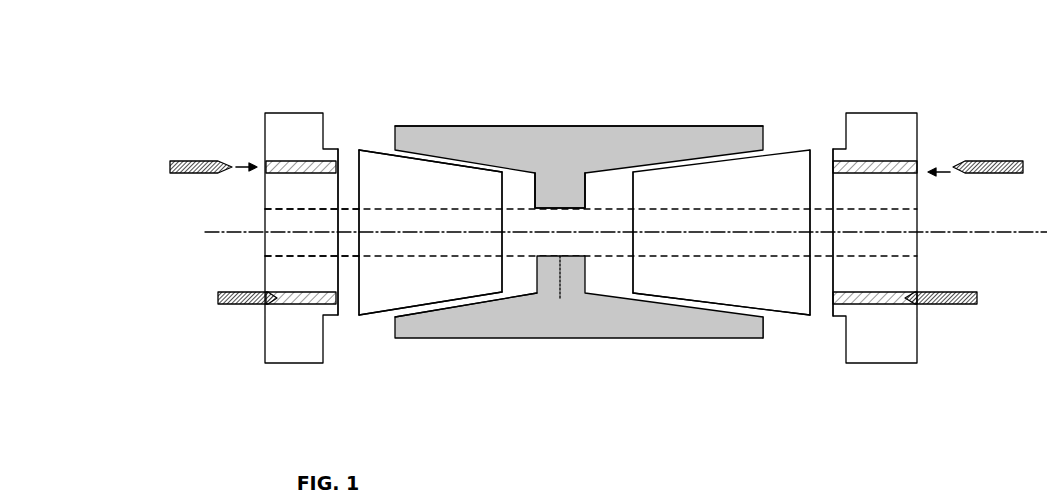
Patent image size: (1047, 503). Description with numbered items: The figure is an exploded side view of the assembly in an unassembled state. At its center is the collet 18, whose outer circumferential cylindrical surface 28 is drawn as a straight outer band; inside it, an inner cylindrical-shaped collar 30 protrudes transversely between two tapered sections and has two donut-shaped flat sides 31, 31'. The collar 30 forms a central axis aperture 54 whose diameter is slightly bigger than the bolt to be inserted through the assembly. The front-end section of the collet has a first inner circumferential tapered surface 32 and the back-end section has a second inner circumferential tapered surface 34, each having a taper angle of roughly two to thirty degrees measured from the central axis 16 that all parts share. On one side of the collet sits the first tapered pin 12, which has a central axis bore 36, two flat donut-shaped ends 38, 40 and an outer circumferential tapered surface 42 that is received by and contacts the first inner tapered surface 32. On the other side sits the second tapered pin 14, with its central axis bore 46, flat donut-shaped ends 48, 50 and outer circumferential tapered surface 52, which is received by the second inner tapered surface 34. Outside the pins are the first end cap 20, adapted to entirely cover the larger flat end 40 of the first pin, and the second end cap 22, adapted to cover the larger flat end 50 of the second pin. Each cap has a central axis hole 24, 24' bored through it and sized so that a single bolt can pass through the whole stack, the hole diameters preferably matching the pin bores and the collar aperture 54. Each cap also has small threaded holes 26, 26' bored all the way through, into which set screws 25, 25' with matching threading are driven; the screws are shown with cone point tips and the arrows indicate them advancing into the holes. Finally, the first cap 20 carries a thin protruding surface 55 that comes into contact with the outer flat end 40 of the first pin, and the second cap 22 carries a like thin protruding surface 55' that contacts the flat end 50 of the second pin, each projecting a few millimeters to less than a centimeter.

The first tapered pin 12 is at (773, 170).
The second tapered pin 14 is at (395, 197).
The central axis 16 is at (940, 231).
The collet 18 is at (620, 147).
The first end cap 20 is at (870, 123).
The second end cap 22 is at (300, 127).
The central axis hole 24 is at (626, 239).
The central axis hole 24' is at (272, 237).
The set screw 25 is at (974, 196).
The set screw 25' is at (212, 197).
The threaded hole 26 is at (905, 224).
The threaded hole 26' is at (271, 249).
The outer circumferential cylindrical surface 28 is at (502, 125).
The inner cylindrical-shaped collar 30 is at (565, 190).
The flat side 31 is at (604, 201).
The flat side 31' is at (520, 201).
The first inner circumferential tapered surface 32 is at (610, 293).
The second inner circumferential tapered surface 34 is at (525, 293).
The central axis bore 36 is at (715, 220).
The flat donut-shaped end 38 is at (637, 280).
The flat donut-shaped end 40 is at (815, 312).
The outer circumferential tapered surface 42 is at (787, 317).
The central axis bore 46 is at (432, 218).
The flat donut-shaped end 48 is at (498, 267).
The flat donut-shaped end 50 is at (352, 307).
The outer circumferential tapered surface 52 is at (372, 318).
The central axis aperture 54 is at (560, 300).
The thin protruding surface 55 is at (846, 185).
The thin protruding surface 55' is at (321, 184).